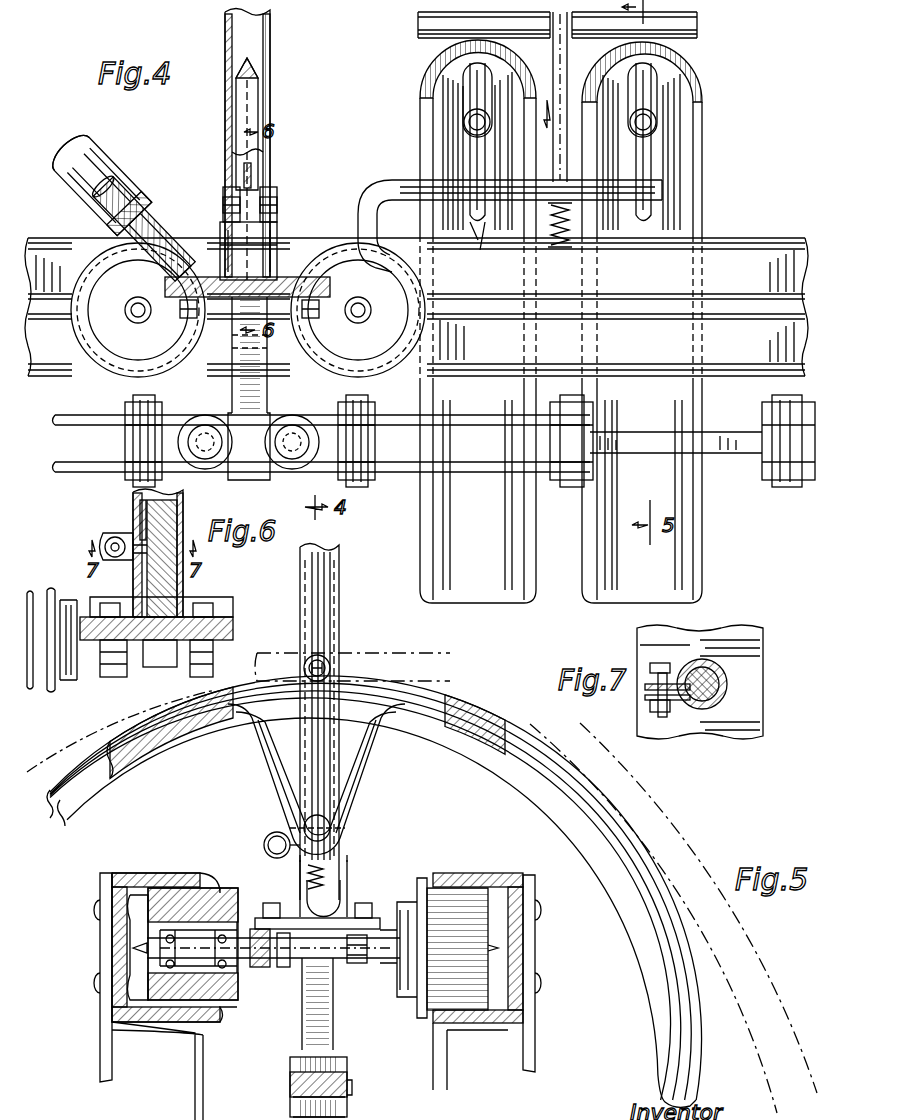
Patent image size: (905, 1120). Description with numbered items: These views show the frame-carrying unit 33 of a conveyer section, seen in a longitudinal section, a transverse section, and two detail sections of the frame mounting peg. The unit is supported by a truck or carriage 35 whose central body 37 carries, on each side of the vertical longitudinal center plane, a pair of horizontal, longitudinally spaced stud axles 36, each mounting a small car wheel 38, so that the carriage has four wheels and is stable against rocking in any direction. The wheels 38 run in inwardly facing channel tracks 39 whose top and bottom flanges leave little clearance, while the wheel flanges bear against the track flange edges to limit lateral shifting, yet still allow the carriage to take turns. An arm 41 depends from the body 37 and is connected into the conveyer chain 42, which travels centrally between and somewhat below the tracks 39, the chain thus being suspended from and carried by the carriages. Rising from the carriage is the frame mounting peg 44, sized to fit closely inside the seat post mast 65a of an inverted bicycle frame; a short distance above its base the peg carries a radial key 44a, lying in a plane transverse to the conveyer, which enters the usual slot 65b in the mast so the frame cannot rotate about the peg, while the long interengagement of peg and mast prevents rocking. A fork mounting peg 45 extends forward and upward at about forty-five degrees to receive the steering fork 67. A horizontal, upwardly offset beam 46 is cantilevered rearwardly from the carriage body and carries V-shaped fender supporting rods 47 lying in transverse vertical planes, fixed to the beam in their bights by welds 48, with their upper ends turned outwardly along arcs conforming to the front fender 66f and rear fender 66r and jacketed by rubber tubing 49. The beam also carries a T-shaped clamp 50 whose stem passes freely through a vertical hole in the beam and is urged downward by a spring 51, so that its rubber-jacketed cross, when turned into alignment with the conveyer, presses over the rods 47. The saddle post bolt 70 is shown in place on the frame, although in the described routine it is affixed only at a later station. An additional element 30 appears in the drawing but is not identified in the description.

In FIG. 4, the carriage frame 30 is at (740, 472).
In FIG. 5, the carriage frame 30 is at (363, 1106).
In FIG. 4, the frame-carrying unit 33 is at (208, 226).
In FIG. 6, the frame-carrying unit 33 is at (198, 596).
In FIG. 7, the frame-carrying unit 33 is at (735, 640).
In FIG. 5, the frame-carrying unit 33 is at (376, 896).
In FIG. 4, the truck or carriage 35 is at (294, 228).
In FIG. 5, the truck or carriage 35 is at (360, 891).
In FIG. 4, the stud axles 36 is at (140, 323).
In FIG. 5, the stud axles 36 is at (270, 965).
In FIG. 4, the central body 37 is at (288, 280).
In FIG. 6, the central body 37 is at (222, 628).
In FIG. 5, the central body 37 is at (290, 915).
In FIG. 4, the car wheel 38 is at (100, 345).
In FIG. 6, the car wheel 38 is at (40, 600).
In FIG. 5, the car wheel 38 is at (170, 888).
In FIG. 4, the channel tracks 39 is at (725, 243).
In FIG. 5, the channel tracks 39 is at (135, 882).
In FIG. 4, the arm 41 is at (268, 402).
In FIG. 6, the arm 41 is at (155, 668).
In FIG. 5, the arm 41 is at (333, 1010).
In FIG. 4, the conveyer chain 42 is at (392, 475).
In FIG. 5, the conveyer chain 42 is at (347, 1066).
In FIG. 4, the peg 44 is at (255, 115).
In FIG. 6, the peg 44 is at (180, 510).
In FIG. 7, the peg 44 is at (715, 705).
In FIG. 6, the radial key 44a is at (135, 548).
In FIG. 7, the radial key 44a is at (700, 702).
In FIG. 4, the fork mounting peg 45 is at (138, 212).
In FIG. 4, the beam 46 is at (625, 190).
In FIG. 5, the beam 46 is at (310, 824).
In FIG. 4, the fender supporting rods 47 is at (652, 150).
In FIG. 5, the fender supporting rods 47 is at (368, 770).
In FIG. 4, the welds 48 is at (483, 246).
In FIG. 5, the welds 48 is at (338, 850).
In FIG. 4, the rubber tubing 49 is at (487, 104).
In FIG. 5, the rubber tubing 49 is at (200, 738).
In FIG. 4, the T-shaped clamp 50 is at (568, 70).
In FIG. 5, the T-shaped clamp 50 is at (313, 770).
In FIG. 4, the spring 51 is at (572, 235).
In FIG. 5, the spring 51 is at (305, 872).
In FIG. 4, the seat post mast 65a is at (272, 55).
In FIG. 6, the seat post mast 65a is at (185, 515).
In FIG. 5, the seat post mast 65a is at (340, 628).
In FIG. 4, the slot 65b is at (252, 172).
In FIG. 6, the slot 65b is at (135, 506).
In FIG. 4, the front fender 66f is at (425, 75).
In FIG. 5, the front fender 66f is at (672, 832).
In FIG. 4, the rear fender 66r is at (708, 68).
In FIG. 5, the rear fender 66r is at (560, 780).
In FIG. 4, the steering fork 67 is at (80, 150).
In FIG. 4, the saddle post bolt 70 is at (226, 195).
In FIG. 6, the saddle post bolt 70 is at (100, 545).
In FIG. 7, the saddle post bolt 70 is at (660, 665).
In FIG. 5, the saddle post bolt 70 is at (264, 843).